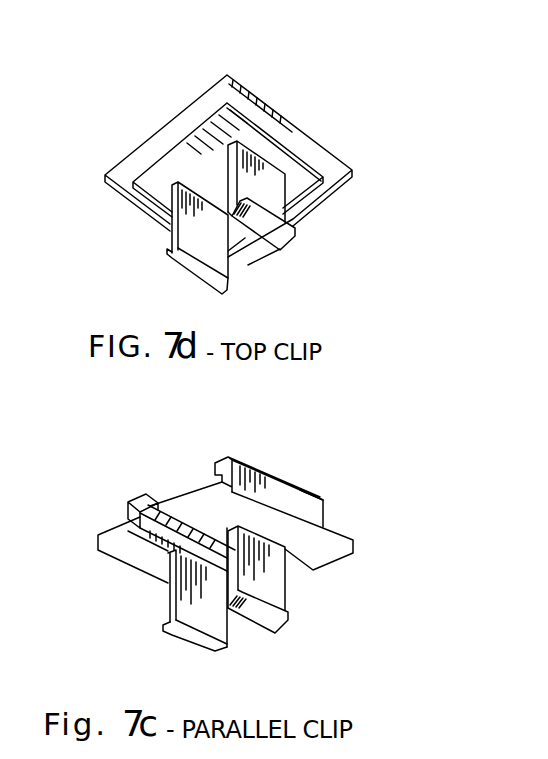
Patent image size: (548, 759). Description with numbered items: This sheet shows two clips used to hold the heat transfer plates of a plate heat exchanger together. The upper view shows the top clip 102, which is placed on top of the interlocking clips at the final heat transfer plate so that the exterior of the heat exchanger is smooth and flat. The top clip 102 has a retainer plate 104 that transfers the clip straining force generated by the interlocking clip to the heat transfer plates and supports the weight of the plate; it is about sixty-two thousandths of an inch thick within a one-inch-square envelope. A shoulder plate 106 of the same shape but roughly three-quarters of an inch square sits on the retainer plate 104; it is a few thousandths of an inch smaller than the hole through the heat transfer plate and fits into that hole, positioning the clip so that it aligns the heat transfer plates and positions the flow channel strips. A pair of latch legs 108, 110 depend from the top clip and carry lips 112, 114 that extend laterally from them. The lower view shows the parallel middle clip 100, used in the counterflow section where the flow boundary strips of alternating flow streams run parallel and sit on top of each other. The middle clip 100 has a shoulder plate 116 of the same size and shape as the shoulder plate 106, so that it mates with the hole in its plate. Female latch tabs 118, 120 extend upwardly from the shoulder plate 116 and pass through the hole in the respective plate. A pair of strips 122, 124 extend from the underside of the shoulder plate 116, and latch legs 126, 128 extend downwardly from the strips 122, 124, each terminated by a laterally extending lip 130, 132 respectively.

In FIG. 7C, the middle clip 100 is at (213, 540).
In FIG. 7D, the top clip 102 is at (223, 192).
In FIG. 7D, the retainer plate 104 is at (338, 157).
In FIG. 7D, the shoulder plate 106 is at (280, 142).
In FIG. 7D, the latch leg 108 is at (277, 242).
In FIG. 7D, the latch leg 110 is at (227, 278).
In FIG. 7D, the lip 112 is at (288, 232).
In FIG. 7D, the lip 114 is at (168, 248).
In FIG. 7C, the shoulder plate 116 is at (186, 505).
In FIG. 7C, the female latch tab 118 is at (283, 492).
In FIG. 7C, the female latch tab 120 is at (147, 495).
In FIG. 7C, the strip 122 is at (322, 530).
In FIG. 7C, the strip 124 is at (137, 562).
In FIG. 7C, the latch leg 126 is at (282, 593).
In FIG. 7C, the latch leg 128 is at (167, 600).
In FIG. 7C, the lip 130 is at (285, 618).
In FIG. 7C, the lip 132 is at (165, 627).